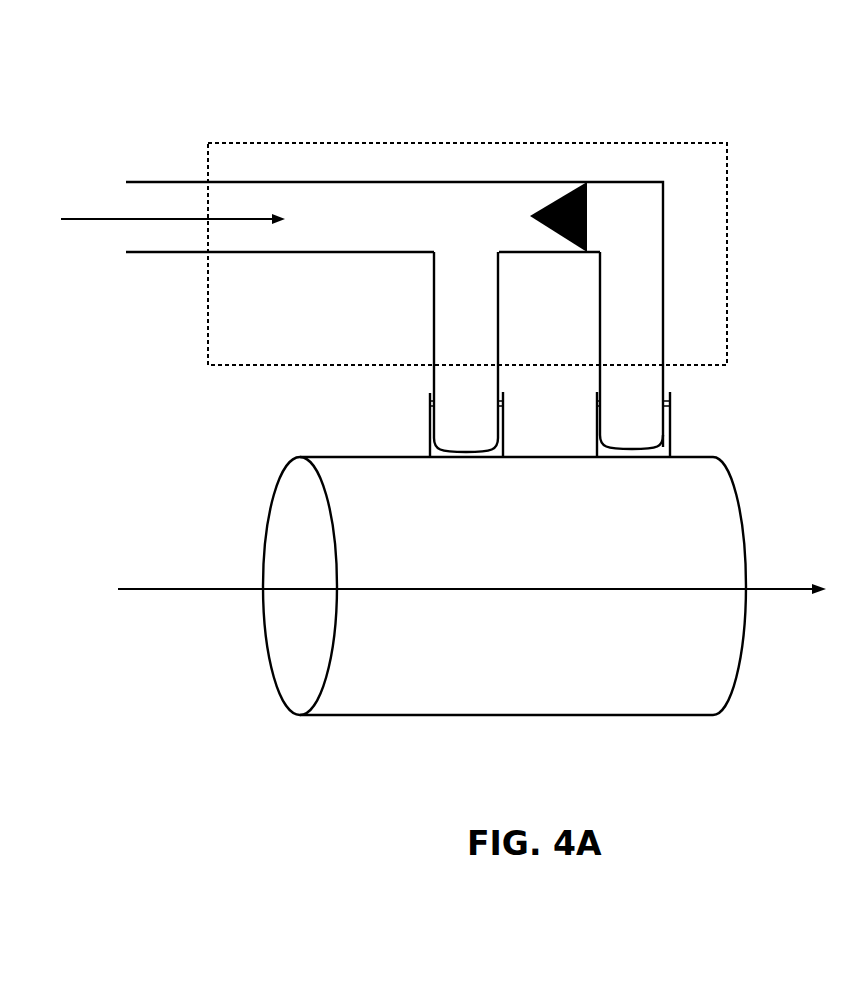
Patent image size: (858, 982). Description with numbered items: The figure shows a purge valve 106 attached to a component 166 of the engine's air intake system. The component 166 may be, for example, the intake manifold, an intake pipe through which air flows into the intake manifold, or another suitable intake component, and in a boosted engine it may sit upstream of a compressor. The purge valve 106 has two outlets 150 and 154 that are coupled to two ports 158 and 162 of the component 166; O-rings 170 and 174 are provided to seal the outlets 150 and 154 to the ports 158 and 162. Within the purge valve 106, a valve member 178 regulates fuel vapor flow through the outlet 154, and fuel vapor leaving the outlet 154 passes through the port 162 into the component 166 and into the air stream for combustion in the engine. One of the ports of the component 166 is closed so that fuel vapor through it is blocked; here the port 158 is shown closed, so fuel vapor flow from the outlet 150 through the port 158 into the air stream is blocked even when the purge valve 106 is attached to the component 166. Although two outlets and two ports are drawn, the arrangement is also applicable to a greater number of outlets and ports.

The purge valve 106 is at (460, 143).
The valve member 178 is at (570, 182).
The outlet 150 is at (434, 316).
The outlet 154 is at (600, 318).
The port 158 is at (430, 420).
The port 162 is at (597, 410).
The O-ring 170 is at (430, 400).
The O-ring 174 is at (597, 400).
The component 166 is at (350, 457).